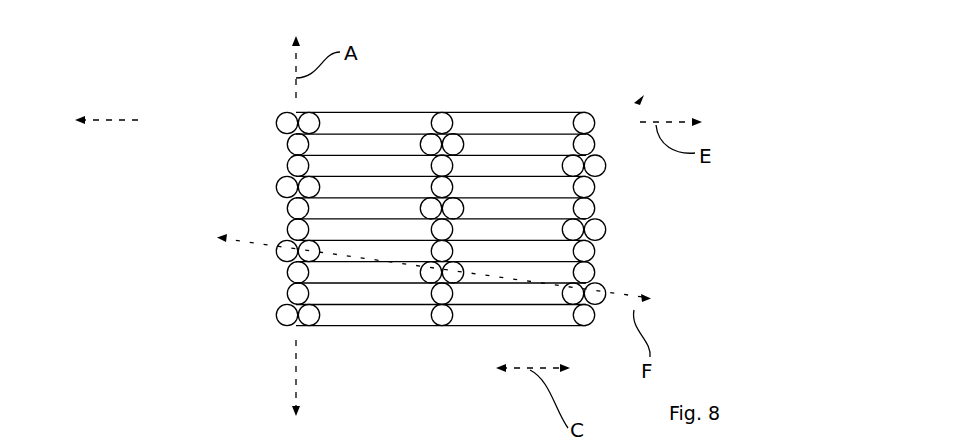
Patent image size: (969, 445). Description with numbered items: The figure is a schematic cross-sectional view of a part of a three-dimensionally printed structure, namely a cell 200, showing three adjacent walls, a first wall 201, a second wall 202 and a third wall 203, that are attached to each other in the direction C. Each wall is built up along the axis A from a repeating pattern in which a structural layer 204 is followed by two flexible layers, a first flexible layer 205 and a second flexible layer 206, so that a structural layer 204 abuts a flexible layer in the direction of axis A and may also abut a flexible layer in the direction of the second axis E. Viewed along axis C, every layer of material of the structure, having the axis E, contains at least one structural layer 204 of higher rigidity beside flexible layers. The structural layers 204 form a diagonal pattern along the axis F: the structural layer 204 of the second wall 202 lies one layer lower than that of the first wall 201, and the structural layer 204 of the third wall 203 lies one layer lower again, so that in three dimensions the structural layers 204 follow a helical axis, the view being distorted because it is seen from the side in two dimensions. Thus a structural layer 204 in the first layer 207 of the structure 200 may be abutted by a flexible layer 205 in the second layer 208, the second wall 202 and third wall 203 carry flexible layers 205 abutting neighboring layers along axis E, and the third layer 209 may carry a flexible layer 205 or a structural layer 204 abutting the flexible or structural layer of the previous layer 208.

The cell 200 is at (637, 102).
The first wall 201 is at (290, 298).
The second wall 202 is at (426, 140).
The third wall 203 is at (592, 212).
The structural layer 204 is at (282, 124).
The first flexible layer 205 is at (290, 148).
The second flexible layer 206 is at (290, 167).
The first layer 207 is at (593, 127).
The second layer 208 is at (594, 145).
The third layer 209 is at (596, 158).